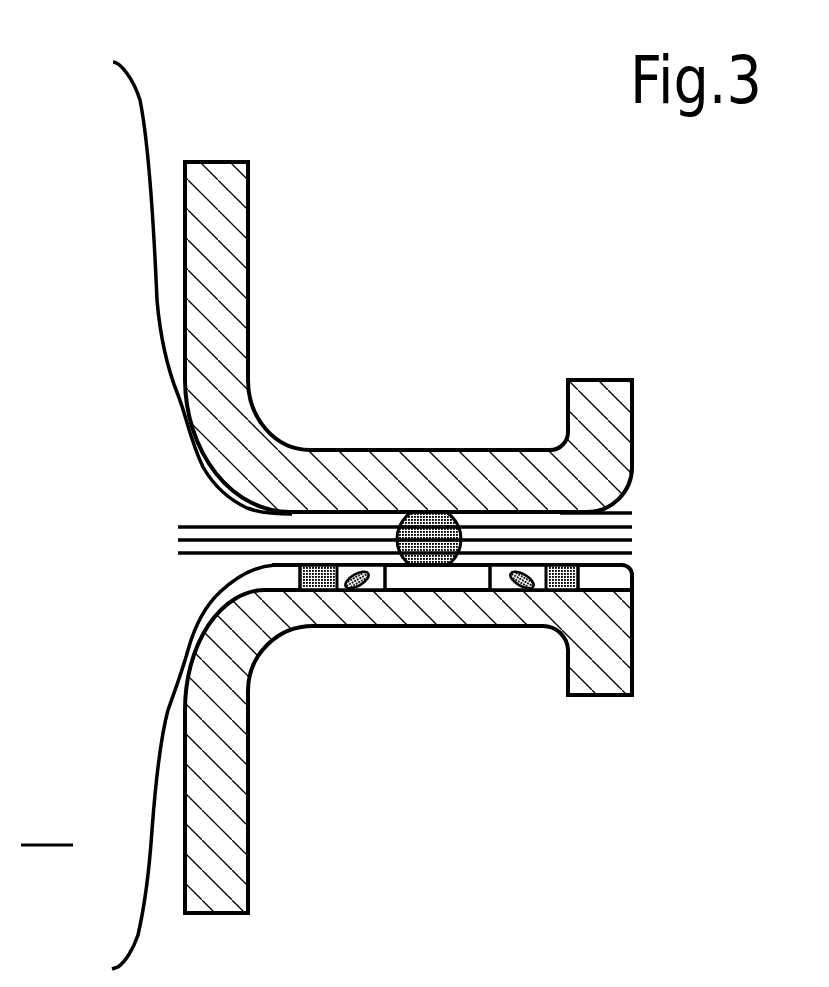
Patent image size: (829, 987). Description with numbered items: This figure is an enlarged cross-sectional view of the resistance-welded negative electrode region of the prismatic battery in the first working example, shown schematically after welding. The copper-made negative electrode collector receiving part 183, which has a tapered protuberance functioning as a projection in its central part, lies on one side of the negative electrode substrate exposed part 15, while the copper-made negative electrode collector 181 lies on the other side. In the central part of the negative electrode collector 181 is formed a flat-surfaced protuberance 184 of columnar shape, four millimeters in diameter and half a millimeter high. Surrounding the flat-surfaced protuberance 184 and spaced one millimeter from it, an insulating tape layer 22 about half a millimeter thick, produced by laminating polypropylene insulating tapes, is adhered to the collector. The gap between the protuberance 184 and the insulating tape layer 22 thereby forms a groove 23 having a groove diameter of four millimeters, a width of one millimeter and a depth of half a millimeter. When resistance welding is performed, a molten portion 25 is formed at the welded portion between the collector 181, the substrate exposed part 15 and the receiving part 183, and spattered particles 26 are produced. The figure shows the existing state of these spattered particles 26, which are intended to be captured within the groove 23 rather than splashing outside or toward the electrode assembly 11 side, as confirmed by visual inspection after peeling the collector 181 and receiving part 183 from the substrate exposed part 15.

The electrode assembly 11 is at (47, 821).
The negative electrode substrate exposed part 15 is at (146, 120).
The negative electrode collector 181 is at (232, 882).
The negative electrode collector receiving part 183 is at (215, 193).
The flat-surfaced protuberance 184 is at (408, 592).
The insulating tape layer 22 is at (318, 583).
The groove 23 is at (378, 583).
The molten portion 25 is at (430, 535).
The spattered particles 26 is at (358, 577).